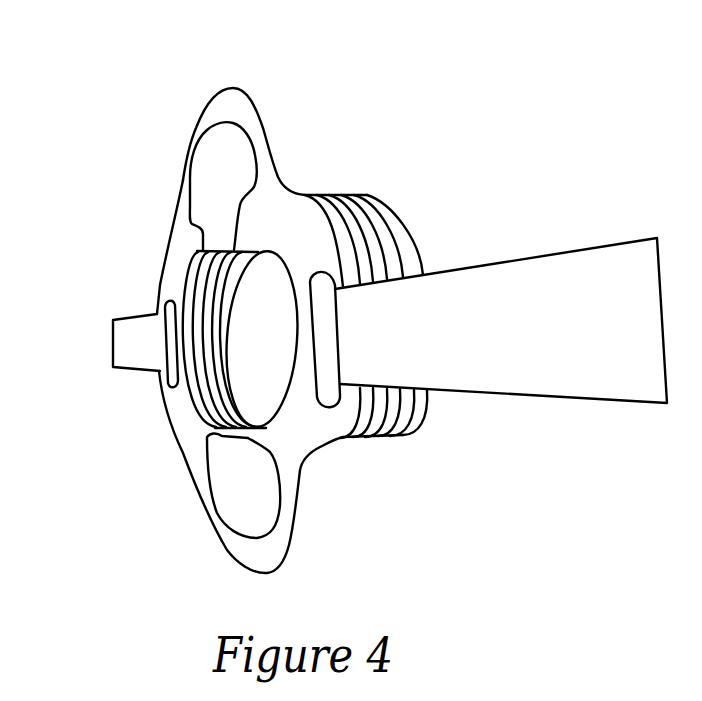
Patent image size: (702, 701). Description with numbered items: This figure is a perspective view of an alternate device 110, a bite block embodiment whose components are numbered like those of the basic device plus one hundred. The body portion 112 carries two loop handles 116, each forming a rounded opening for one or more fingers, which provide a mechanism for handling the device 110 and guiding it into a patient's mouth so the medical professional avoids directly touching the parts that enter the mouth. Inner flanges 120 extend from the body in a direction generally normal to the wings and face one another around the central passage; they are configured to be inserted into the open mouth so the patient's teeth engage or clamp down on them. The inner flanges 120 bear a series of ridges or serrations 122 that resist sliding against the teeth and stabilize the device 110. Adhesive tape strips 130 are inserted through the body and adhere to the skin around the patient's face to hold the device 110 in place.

The device 110 is at (205, 100).
The body portion 112 is at (182, 267).
The loop handles 116 is at (263, 147).
The inner flanges 120 is at (226, 250).
The ridges or serrations 122 is at (213, 393).
The adhesive tape strips 130 is at (132, 337).